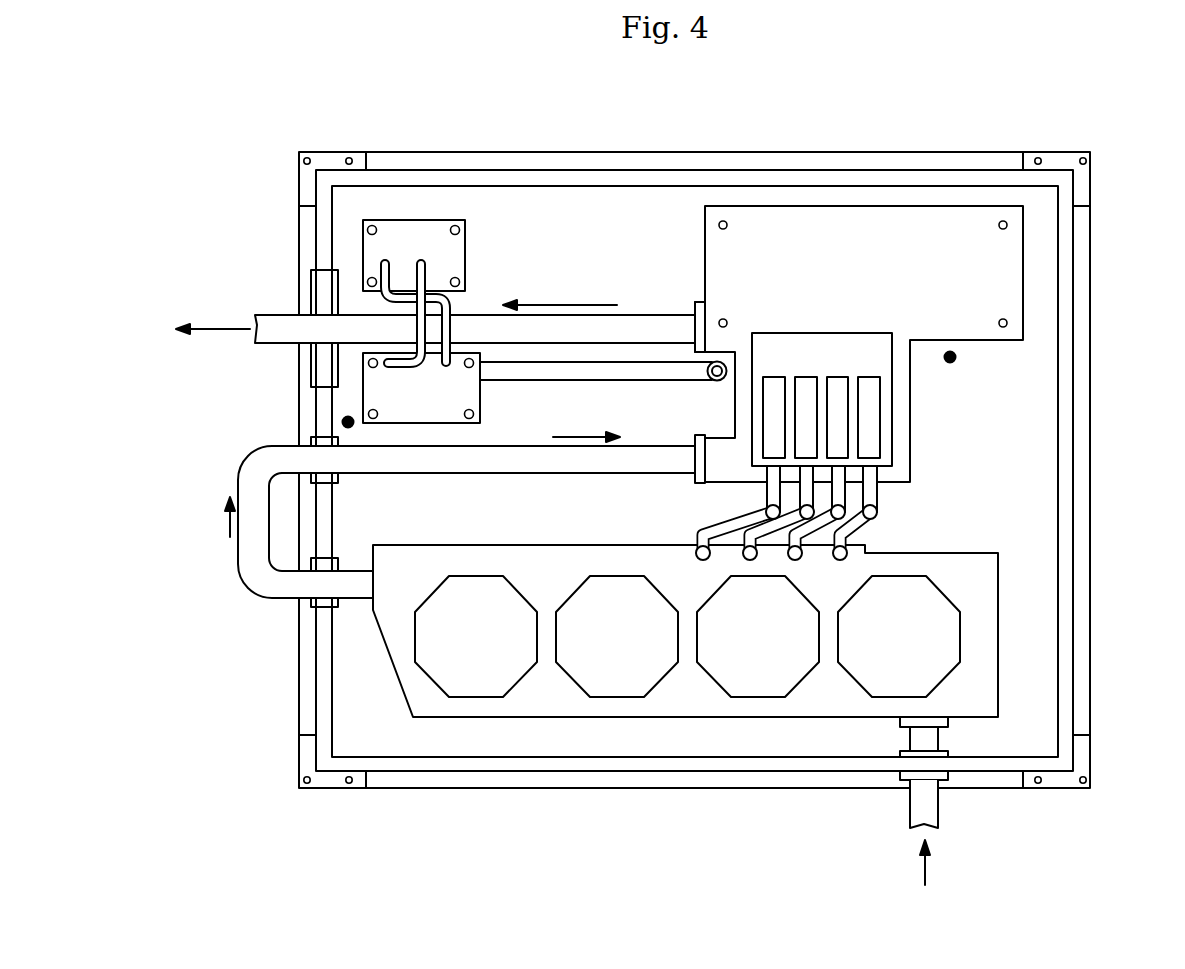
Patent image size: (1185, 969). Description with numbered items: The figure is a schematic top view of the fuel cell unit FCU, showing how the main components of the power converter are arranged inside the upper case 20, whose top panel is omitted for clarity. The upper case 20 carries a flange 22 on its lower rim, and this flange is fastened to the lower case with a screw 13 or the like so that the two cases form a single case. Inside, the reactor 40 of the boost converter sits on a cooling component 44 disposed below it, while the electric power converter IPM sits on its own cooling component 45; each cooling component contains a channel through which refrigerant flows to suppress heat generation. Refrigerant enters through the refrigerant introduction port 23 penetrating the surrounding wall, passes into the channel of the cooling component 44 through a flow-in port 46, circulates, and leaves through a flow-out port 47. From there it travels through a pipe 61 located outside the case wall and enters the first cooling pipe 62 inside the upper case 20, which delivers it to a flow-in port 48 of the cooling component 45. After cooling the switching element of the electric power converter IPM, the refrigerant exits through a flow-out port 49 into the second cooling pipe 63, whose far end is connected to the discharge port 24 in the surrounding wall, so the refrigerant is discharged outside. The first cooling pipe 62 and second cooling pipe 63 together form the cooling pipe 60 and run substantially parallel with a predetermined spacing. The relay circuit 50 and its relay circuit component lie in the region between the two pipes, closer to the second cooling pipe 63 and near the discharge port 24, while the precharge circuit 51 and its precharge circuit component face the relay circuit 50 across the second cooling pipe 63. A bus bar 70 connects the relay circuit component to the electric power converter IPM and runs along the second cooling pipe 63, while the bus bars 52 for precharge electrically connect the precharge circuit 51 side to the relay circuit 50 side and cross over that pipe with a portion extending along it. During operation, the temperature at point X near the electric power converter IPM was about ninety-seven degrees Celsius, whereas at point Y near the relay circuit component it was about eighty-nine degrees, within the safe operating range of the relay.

The screw 13 is at (1090, 158).
The upper case 20 is at (974, 148).
The flange 22 is at (1082, 325).
The refrigerant introduction port 23 is at (928, 805).
The discharge port 24 is at (277, 313).
The reactor 40 is at (647, 663).
The cooling component 44 is at (548, 700).
The cooling component 45 is at (892, 425).
The flow-in port 46 is at (918, 729).
The flow-out port 47 is at (372, 590).
The flow-in port 48 is at (696, 458).
The flow-out port 49 is at (696, 328).
The relay circuit 50 is at (376, 406).
The upper plate (51a) 51 is at (412, 235).
The bus bars for precharge 52 is at (448, 327).
The cooling pipe 60 is at (486, 385).
The pipe 61 is at (251, 594).
The first cooling pipe 62 is at (519, 475).
The second cooling pipe 63 is at (588, 312).
The bus bar 70 is at (518, 381).
The fuel cell unit FCU is at (250, 116).
The electric power converter IPM is at (912, 397).
The point X is at (958, 357).
The point Y is at (341, 421).